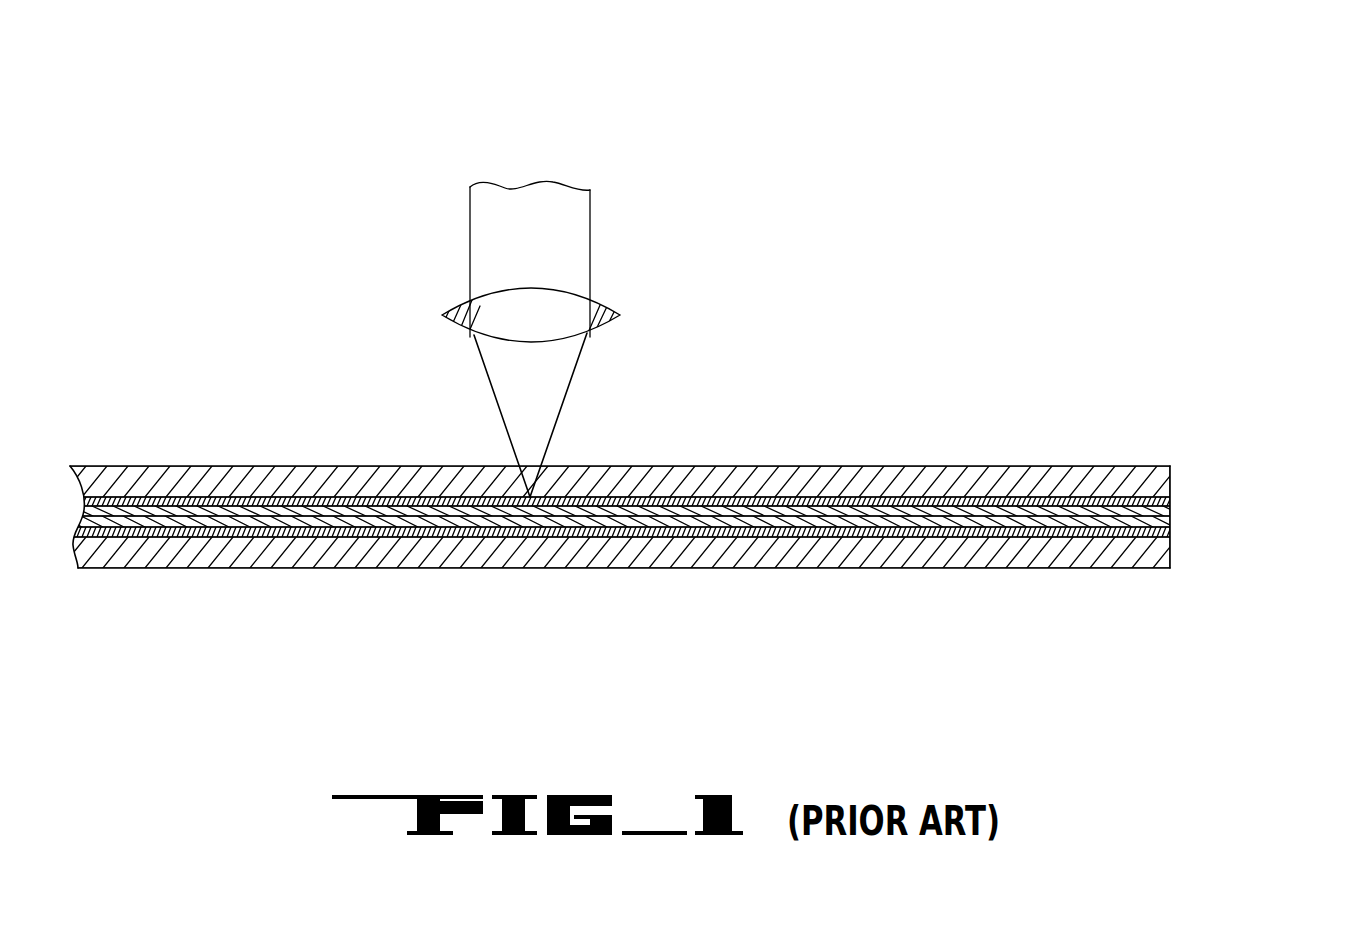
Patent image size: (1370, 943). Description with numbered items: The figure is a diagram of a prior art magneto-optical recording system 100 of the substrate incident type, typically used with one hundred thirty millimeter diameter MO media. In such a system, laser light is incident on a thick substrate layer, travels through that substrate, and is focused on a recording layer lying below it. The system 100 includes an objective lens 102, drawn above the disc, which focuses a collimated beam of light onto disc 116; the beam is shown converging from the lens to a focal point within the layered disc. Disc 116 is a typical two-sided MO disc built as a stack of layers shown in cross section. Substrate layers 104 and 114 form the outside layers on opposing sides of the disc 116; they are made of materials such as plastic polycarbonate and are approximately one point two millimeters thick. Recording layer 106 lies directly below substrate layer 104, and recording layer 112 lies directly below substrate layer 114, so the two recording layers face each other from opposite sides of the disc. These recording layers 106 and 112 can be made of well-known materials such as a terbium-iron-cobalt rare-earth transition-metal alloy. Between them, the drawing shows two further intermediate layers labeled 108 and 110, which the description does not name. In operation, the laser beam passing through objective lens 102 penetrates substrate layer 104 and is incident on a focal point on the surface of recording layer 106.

The MO recording system 100 is at (1004, 57).
The objective lens 102 is at (602, 301).
The substrate layer 104 is at (1172, 482).
The recording layer 106 is at (1172, 503).
The first reflective layer 108 is at (1172, 515).
The spacer layer 110 is at (1172, 524).
The recording layer 112 is at (1172, 535).
The substrate layer 114 is at (1172, 555).
The disc 116 is at (857, 455).